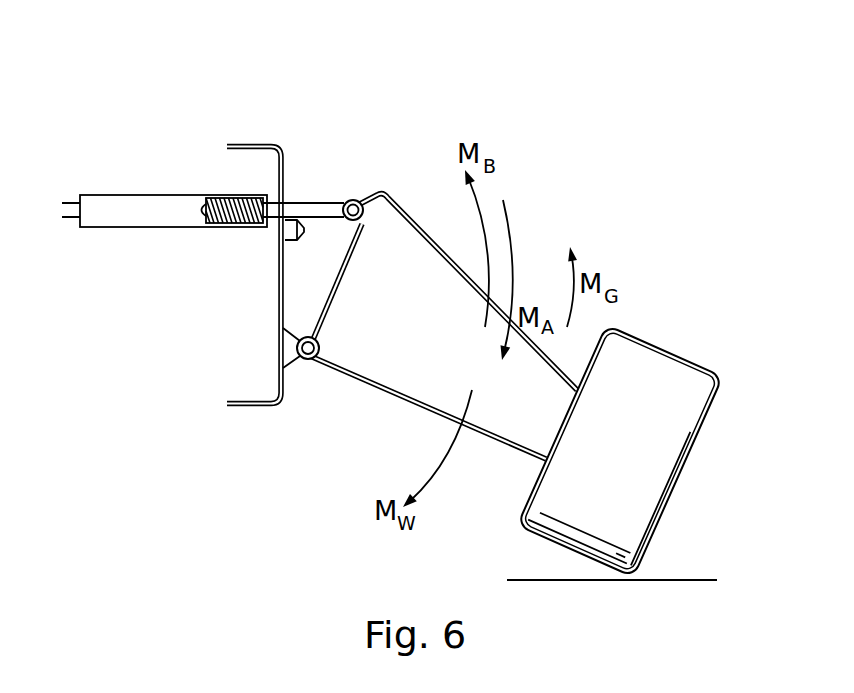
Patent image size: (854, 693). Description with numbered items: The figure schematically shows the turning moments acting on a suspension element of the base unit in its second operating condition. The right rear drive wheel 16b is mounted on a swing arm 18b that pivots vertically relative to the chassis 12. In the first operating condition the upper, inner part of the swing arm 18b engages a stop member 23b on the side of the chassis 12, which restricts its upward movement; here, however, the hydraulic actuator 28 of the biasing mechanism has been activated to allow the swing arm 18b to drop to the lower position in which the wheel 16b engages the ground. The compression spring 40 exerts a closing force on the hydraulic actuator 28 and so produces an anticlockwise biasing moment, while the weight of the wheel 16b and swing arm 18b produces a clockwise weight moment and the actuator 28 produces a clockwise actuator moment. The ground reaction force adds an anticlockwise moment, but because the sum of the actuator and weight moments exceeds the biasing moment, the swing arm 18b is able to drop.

The chassis 12 is at (252, 143).
The hydraulic actuator 28 is at (115, 203).
The compression spring 40 is at (227, 224).
The stop member 23b is at (292, 236).
The swing arm 18b is at (372, 365).
The rear drive wheel 16b is at (660, 353).